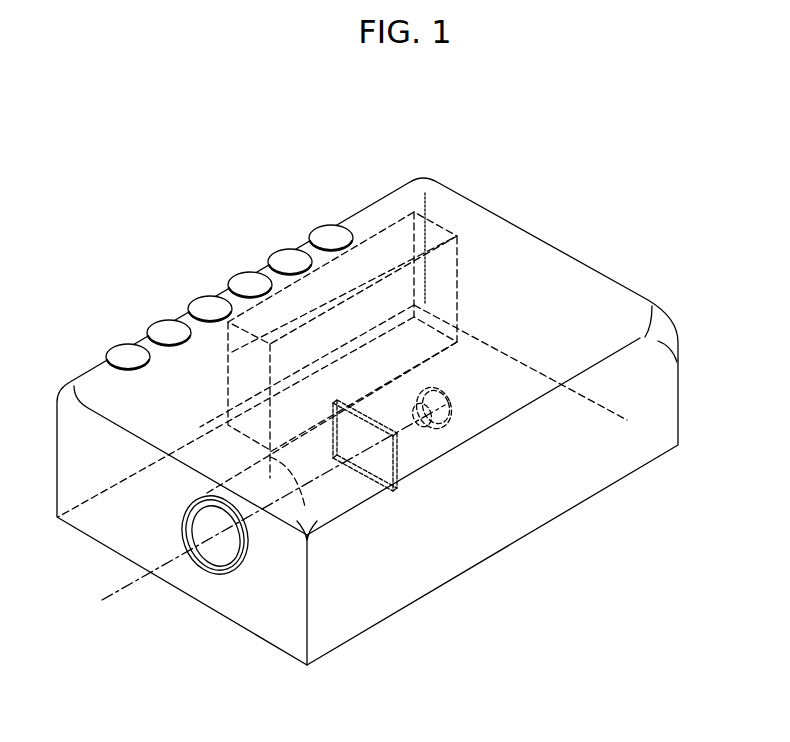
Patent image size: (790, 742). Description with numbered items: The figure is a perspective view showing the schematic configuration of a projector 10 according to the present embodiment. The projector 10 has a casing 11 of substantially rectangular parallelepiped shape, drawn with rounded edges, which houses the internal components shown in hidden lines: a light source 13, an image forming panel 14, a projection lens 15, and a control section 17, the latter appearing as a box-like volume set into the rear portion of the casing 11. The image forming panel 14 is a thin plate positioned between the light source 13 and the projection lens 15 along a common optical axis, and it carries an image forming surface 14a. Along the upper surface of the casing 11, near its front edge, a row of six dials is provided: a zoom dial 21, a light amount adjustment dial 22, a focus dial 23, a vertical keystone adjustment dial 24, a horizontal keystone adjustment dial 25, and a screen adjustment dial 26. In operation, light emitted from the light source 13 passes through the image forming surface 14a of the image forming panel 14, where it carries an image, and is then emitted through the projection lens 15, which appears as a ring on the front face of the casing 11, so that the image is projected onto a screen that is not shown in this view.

The projector 10 is at (600, 244).
The casing 11 is at (525, 243).
The light source 13 is at (445, 398).
The image forming panel 14 is at (399, 459).
The image forming surface 14a is at (362, 468).
The projection lens 15 is at (213, 557).
The control section 17 is at (437, 225).
The zoom dial 21 is at (122, 353).
The light amount adjustment dial 22 is at (163, 330).
The focus dial 23 is at (203, 305).
The vertical keystone adjustment dial 24 is at (247, 280).
The horizontal keystone adjustment dial 25 is at (287, 257).
The screen adjustment dial 26 is at (328, 233).